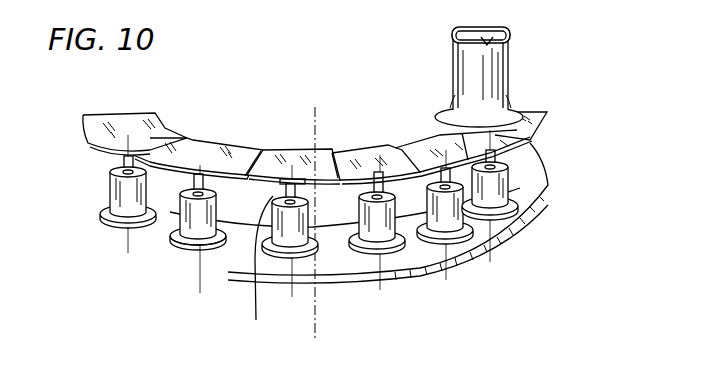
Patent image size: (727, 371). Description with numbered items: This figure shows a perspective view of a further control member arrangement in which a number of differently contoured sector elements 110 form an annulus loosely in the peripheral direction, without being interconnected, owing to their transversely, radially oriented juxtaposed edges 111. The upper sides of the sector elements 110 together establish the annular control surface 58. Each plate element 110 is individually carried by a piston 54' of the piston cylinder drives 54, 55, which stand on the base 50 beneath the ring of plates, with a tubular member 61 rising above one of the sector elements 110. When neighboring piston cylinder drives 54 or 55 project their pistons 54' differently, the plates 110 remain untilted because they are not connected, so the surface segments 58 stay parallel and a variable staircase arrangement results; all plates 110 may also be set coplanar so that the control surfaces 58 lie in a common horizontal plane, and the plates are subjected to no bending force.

The base plate 50 is at (430, 248).
The piston cylinder drive 54 is at (182, 242).
The piston cylinder drive 55 is at (309, 210).
The piston 54' is at (280, 256).
The annular control surface 58 is at (190, 139).
The tube 61 is at (511, 77).
The sector element 110 is at (88, 145).
The juxtaposed edges 111 is at (340, 152).